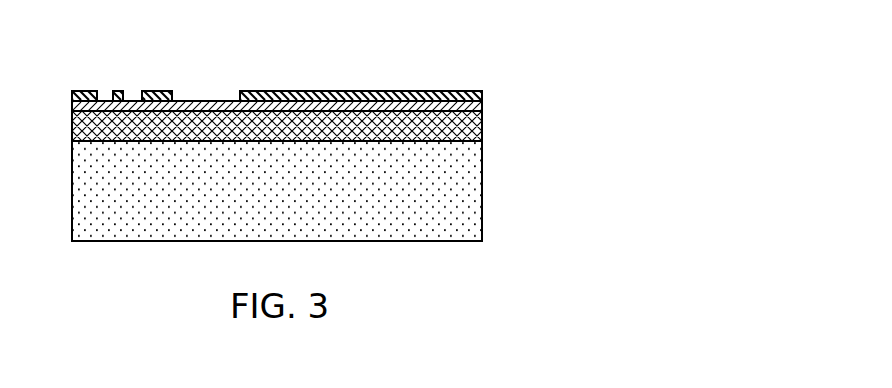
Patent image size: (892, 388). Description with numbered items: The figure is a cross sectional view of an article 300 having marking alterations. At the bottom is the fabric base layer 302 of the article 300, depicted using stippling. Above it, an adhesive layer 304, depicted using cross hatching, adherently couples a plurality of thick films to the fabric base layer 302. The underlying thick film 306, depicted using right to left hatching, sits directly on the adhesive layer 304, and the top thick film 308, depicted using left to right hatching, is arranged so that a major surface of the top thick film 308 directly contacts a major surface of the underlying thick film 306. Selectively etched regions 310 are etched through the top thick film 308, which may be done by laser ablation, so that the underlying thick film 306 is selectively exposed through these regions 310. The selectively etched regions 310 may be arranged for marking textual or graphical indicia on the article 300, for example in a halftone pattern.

The article 300 is at (447, 66).
The fabric base layer 302 is at (484, 154).
The adhesive layer 304 is at (482, 128).
The underlying thick film 306 is at (482, 107).
The top thick film 308 is at (482, 97).
The selectively etched regions 310 is at (220, 92).